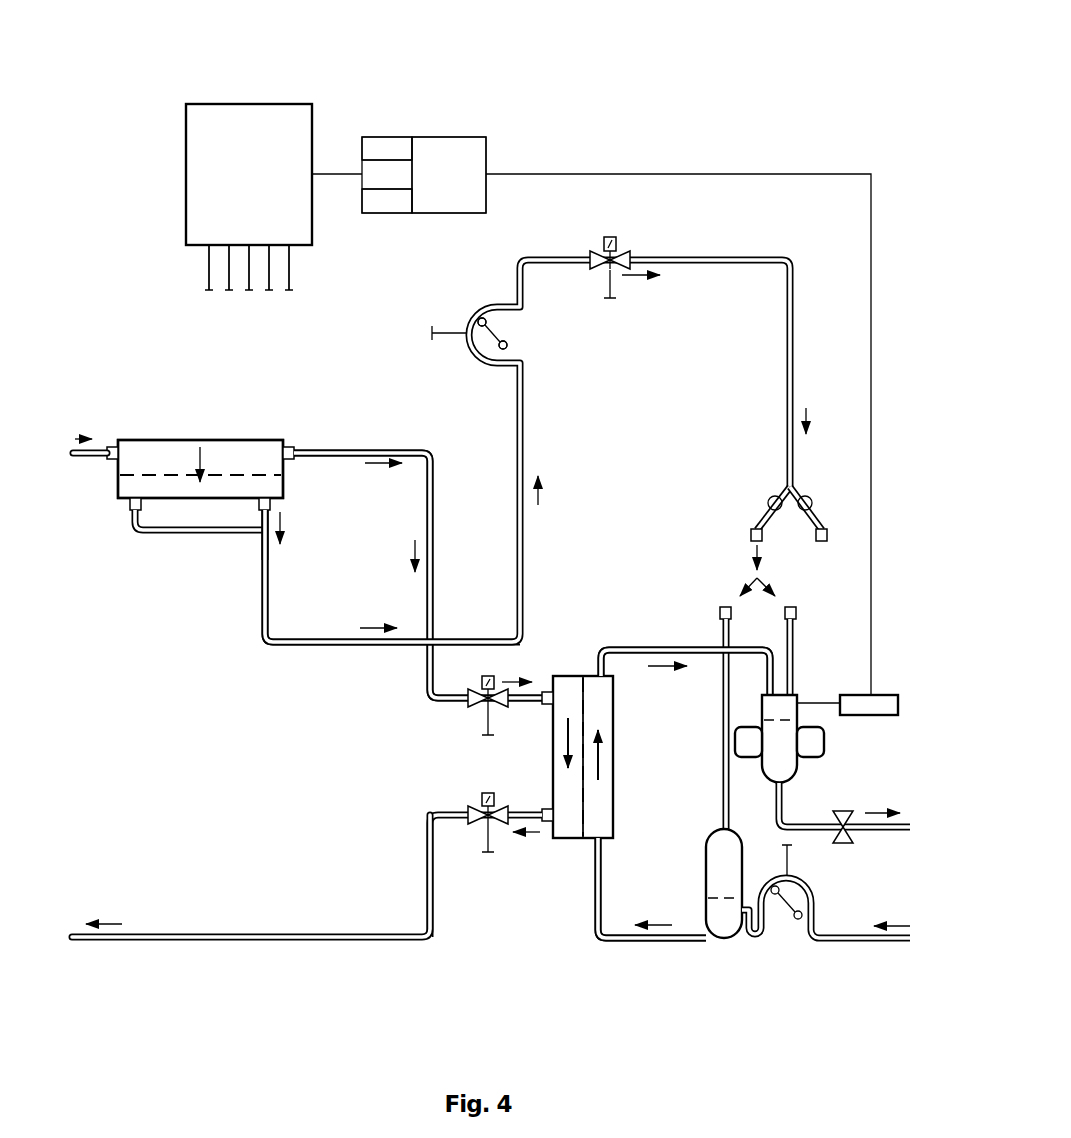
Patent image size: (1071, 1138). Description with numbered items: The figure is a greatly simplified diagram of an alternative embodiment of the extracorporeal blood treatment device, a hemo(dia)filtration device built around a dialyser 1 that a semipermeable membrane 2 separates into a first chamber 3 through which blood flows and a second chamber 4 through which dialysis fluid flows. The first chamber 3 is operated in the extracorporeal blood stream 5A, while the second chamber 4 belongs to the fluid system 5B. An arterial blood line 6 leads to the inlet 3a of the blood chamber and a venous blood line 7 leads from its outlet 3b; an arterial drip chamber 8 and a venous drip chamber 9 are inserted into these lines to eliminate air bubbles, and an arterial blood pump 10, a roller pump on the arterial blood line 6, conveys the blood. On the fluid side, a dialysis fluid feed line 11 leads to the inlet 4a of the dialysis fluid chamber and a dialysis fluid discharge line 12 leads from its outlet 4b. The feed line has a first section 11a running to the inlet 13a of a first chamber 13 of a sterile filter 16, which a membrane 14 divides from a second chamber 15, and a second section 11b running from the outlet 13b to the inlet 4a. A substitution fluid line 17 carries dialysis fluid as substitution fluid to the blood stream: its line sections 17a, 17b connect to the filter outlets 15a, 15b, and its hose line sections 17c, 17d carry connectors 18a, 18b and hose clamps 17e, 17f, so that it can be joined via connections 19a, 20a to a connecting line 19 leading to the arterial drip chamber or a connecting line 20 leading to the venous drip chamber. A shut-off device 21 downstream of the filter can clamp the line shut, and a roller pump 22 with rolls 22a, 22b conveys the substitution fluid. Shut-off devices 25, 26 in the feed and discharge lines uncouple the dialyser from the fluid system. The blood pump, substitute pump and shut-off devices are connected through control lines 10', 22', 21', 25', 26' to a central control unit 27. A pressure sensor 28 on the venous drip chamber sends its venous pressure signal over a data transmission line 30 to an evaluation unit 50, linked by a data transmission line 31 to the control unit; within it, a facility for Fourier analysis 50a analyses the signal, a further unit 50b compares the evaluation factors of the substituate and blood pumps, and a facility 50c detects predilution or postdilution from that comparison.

The dialyser 1 is at (575, 670).
The semipermeable membrane 2 is at (583, 805).
The first chamber 3 is at (613, 780).
The inlet of the blood chamber 3a is at (613, 838).
The outlet of the blood chamber 3b is at (613, 680).
The second chamber 4 is at (556, 708).
The inlet of the dialysis fluid chamber 4a is at (548, 690).
The outlet of the dialysis fluid chamber 4b is at (548, 825).
The extracorporeal blood stream 5A is at (686, 755).
The fluid system 5B is at (306, 752).
The arterial blood line 6 is at (660, 942).
The venous blood line 7 is at (642, 648).
The arterial drip chamber 8 is at (712, 860).
The venous drip chamber 9 is at (790, 765).
The arterial blood pump 10 is at (826, 937).
The control line 10' is at (480, 560).
The dialysis fluid feed line 11 is at (330, 446).
The first section of the dialysis fluid feed line 11a is at (82, 460).
The second section of the dialysis fluid feed line 11b is at (370, 450).
The dialysis fluid discharge line 12 is at (345, 942).
The first chamber of the sterile filter 13 is at (238, 440).
The inlet of the first filter chamber 13a is at (112, 463).
The outlet of the first filter chamber 13b is at (290, 447).
The membrane 14 is at (265, 475).
The second chamber of the sterile filter 15 is at (225, 488).
The first outlet of the sterile filter 15a is at (132, 512).
The second outlet of the sterile filter 15b is at (275, 505).
The sterile filter 16 is at (170, 432).
The substitution fluid line 17 is at (530, 447).
The line section 17a is at (190, 535).
The line section 17b is at (285, 520).
The hose line section 17c is at (768, 505).
The hose line section 17d is at (812, 505).
The hose clamp 17e is at (778, 497).
The hose clamp 17f is at (812, 497).
The connector 18a is at (750, 535).
The connector 18b is at (824, 545).
The connecting line 19 is at (722, 726).
The connection 19a is at (718, 612).
The connecting line 20 is at (793, 683).
The connection 20a is at (797, 612).
The shut-off device 21 is at (644, 242).
The control line 21' is at (415, 295).
The roller pump 22 is at (531, 333).
The roll 22a is at (486, 322).
The roll 22b is at (507, 347).
The control line 22' is at (378, 295).
The shut-off device 25 is at (451, 704).
The control line 25' is at (373, 505).
The shut-off device 26 is at (468, 860).
The control line 26' is at (391, 562).
The central control unit 27 is at (251, 104).
The pressure sensor 28 is at (887, 715).
The data transmission line 30 is at (871, 322).
The data transmission line 31 is at (339, 174).
The evaluation unit 50 is at (440, 137).
The facility for Fourier analysis 50a is at (385, 137).
The further unit 50b is at (400, 174).
The facility 50c is at (380, 192).